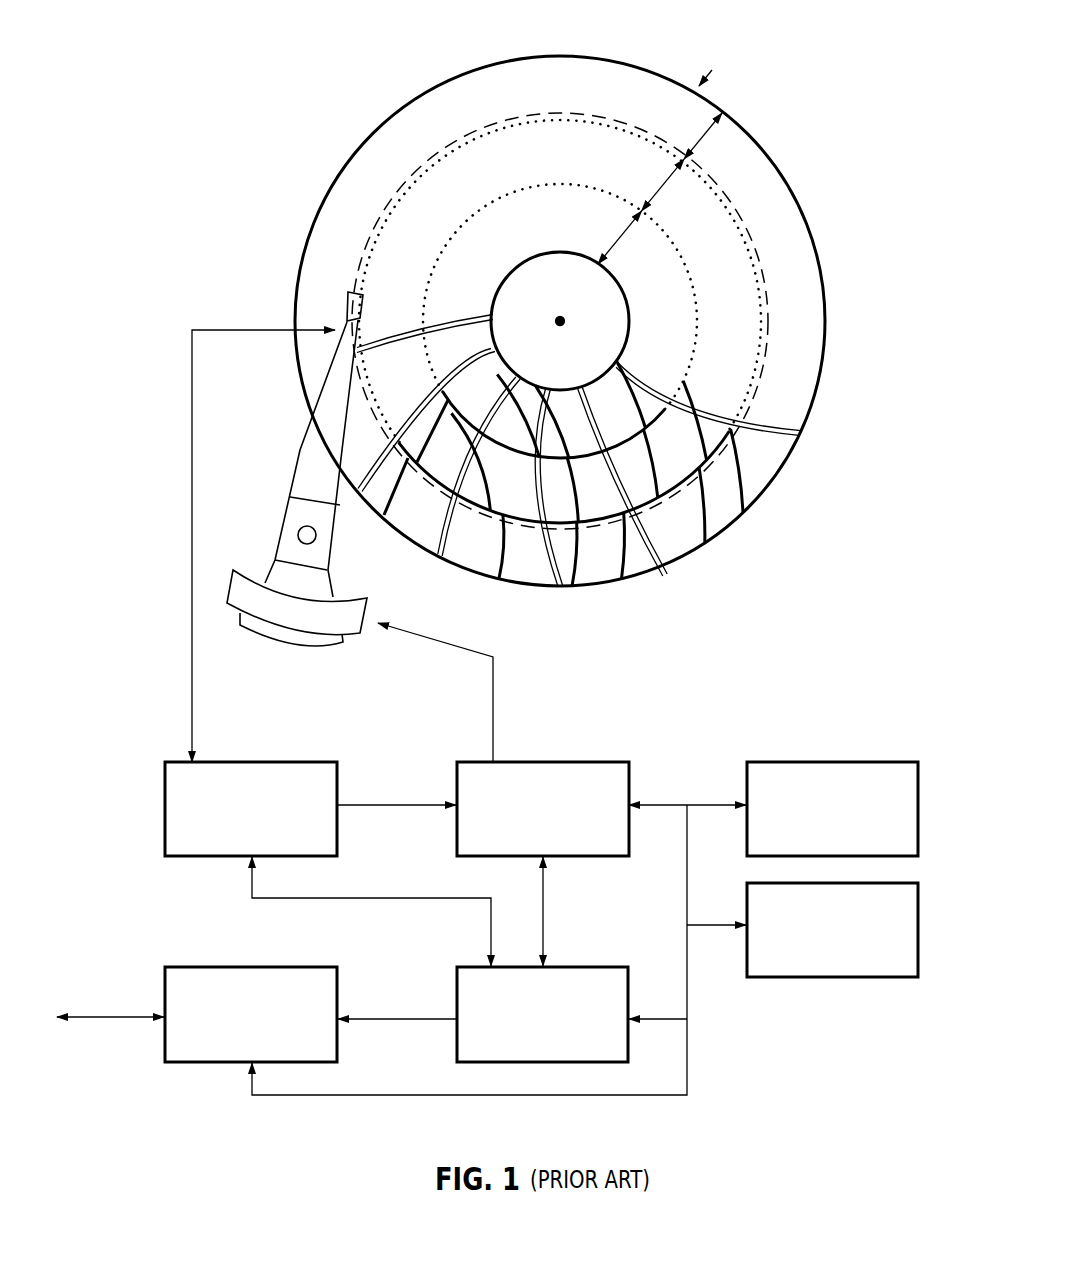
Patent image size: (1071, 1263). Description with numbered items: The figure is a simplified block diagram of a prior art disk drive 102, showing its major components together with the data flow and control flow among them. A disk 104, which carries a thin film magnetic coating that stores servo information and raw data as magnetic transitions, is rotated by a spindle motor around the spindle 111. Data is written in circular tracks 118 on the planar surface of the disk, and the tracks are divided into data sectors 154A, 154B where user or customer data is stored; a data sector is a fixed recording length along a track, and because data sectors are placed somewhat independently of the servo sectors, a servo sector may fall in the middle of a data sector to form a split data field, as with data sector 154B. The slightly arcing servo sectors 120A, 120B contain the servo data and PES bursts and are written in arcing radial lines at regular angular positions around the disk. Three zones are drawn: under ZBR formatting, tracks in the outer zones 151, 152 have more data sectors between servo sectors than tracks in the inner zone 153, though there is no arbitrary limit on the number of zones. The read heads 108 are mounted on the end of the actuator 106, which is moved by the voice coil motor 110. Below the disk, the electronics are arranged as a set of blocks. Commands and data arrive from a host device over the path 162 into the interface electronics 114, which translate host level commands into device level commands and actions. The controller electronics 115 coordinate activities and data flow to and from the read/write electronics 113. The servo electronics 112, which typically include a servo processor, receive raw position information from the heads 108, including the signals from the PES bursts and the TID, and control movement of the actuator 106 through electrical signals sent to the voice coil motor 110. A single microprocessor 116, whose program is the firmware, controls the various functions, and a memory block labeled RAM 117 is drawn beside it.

The disk drive 102 is at (212, 121).
The disk 104 is at (333, 178).
The actuator 106 is at (318, 460).
The read head 108 is at (346, 300).
The voice coil motor 110 is at (248, 568).
The spindle 111 is at (566, 324).
The servo electronics 112 is at (573, 762).
The read/write electronics 113 is at (283, 762).
The interface electronics 114 is at (283, 967).
The controller electronics 115 is at (573, 967).
The microprocessor 116 is at (863, 762).
The RAM 117 is at (865, 977).
The circular track 118 is at (435, 155).
The servo sector 120A is at (690, 548).
The servo sector 120B is at (793, 443).
The outer zone 151 is at (700, 140).
The outer zone 152 is at (661, 188).
The inner zone 153 is at (620, 238).
The data sector 154A is at (756, 478).
The data sector 154B is at (712, 518).
The path 162 is at (110, 998).